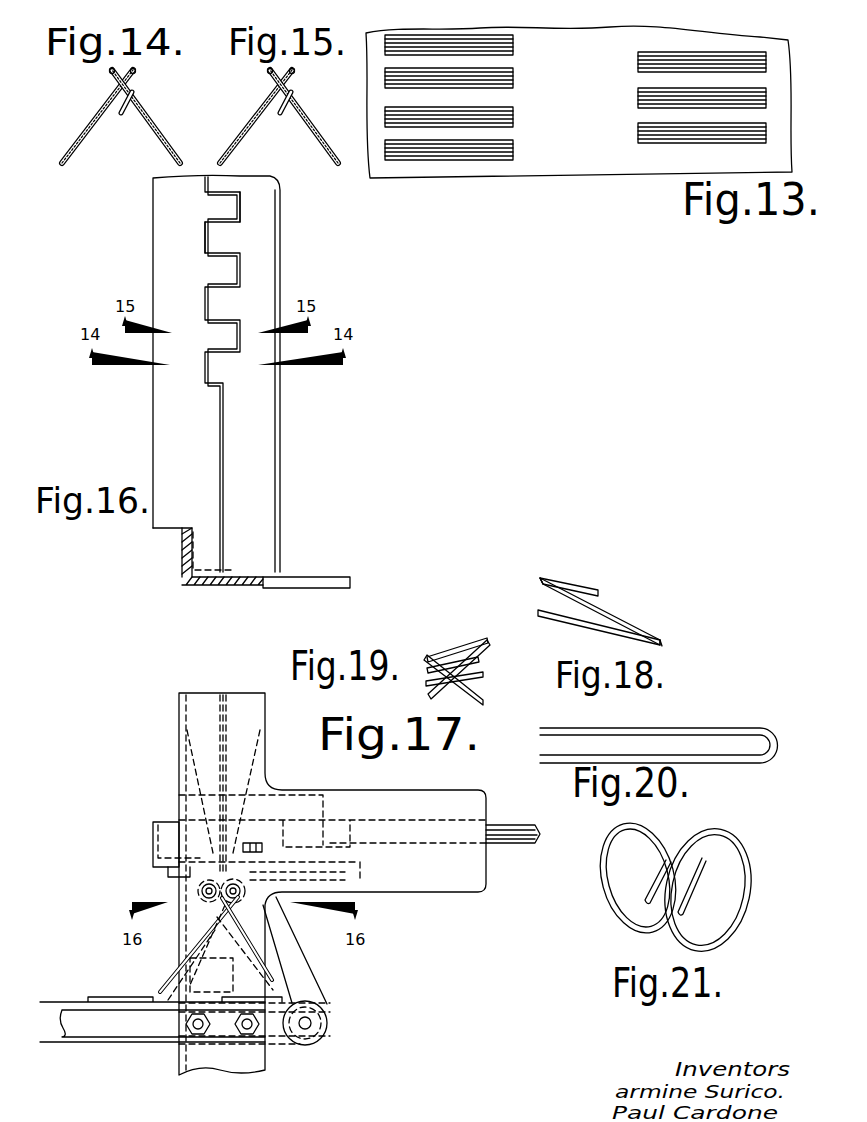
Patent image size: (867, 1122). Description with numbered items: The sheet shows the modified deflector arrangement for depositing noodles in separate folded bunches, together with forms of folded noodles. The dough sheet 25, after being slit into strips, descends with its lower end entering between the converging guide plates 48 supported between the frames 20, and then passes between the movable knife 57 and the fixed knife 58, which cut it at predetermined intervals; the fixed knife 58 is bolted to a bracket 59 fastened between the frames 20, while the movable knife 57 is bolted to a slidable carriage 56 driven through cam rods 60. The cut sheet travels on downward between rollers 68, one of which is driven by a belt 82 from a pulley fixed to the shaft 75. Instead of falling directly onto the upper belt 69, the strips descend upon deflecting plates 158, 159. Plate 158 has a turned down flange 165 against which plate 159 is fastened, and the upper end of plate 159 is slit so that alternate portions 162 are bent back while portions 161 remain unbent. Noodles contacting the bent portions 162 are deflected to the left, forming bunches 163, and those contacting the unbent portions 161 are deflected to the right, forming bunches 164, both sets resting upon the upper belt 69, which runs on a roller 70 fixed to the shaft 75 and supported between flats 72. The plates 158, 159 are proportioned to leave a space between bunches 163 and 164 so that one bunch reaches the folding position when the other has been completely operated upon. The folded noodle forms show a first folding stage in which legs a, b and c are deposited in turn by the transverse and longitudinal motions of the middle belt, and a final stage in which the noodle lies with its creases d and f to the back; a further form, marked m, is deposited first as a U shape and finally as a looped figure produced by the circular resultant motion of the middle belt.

In FIG. 16, the frames 20 is at (303, 576).
In FIG. 17, the frames 20 is at (440, 790).
In FIG. 17, the dough sheet 25 is at (222, 712).
In FIG. 17, the converging guide plates 48 is at (192, 762).
In FIG. 17, the slidable carriage 56 is at (152, 835).
In FIG. 17, the movable knife 57 is at (165, 868).
In FIG. 17, the fixed knife 58 is at (262, 852).
In FIG. 17, the bracket 59 is at (360, 878).
In FIG. 17, the cam rods 60 is at (510, 826).
In FIG. 17, the rollers 68 is at (202, 891).
In FIG. 13, the upper belt 69 is at (520, 182).
In FIG. 17, the upper belt 69 is at (60, 1000).
In FIG. 17, the roller 70 is at (328, 1028).
In FIG. 17, the flats 72 is at (92, 1025).
In FIG. 17, the shaft 75 is at (312, 1022).
In FIG. 17, the belt 82 is at (292, 952).
In FIG. 14, the deflecting plate 158 is at (97, 118).
In FIG. 15, the deflecting plate 158 is at (252, 117).
In FIG. 16, the deflecting plate 158 is at (157, 413).
In FIG. 17, the deflecting plate 158 is at (162, 985).
In FIG. 14, the deflecting plate 159 is at (152, 120).
In FIG. 15, the deflecting plate 159 is at (312, 118).
In FIG. 16, the deflecting plate 159 is at (258, 412).
In FIG. 17, the deflecting plate 159 is at (252, 968).
In FIG. 14, the unbent portions 161 is at (110, 75).
In FIG. 15, the unbent portions 161 is at (268, 75).
In FIG. 16, the unbent portions 161 is at (204, 237).
In FIG. 14, the bent back portions 162 is at (135, 76).
In FIG. 15, the bent back portions 162 is at (294, 76).
In FIG. 16, the bent back portions 162 is at (241, 210).
In FIG. 13, the bunches 163 is at (434, 160).
In FIG. 13, the bunches 164 is at (686, 145).
In FIG. 14, the turned down flange 165 is at (127, 108).
In FIG. 15, the turned down flange 165 is at (286, 108).
In FIG. 18, the leg a is at (580, 583).
In FIG. 19, the leg a is at (447, 648).
In FIG. 18, the leg b is at (610, 610).
In FIG. 19, the leg b is at (479, 660).
In FIG. 18, the leg c is at (570, 620).
In FIG. 19, the leg c is at (484, 674).
In FIG. 18, the crease d is at (663, 644).
In FIG. 19, the crease d is at (484, 699).
In FIG. 18, the crease f is at (538, 580).
In FIG. 19, the crease f is at (490, 641).
In FIG. 20, the wire loop m is at (778, 748).
In FIG. 21, the wire loop m is at (622, 826).